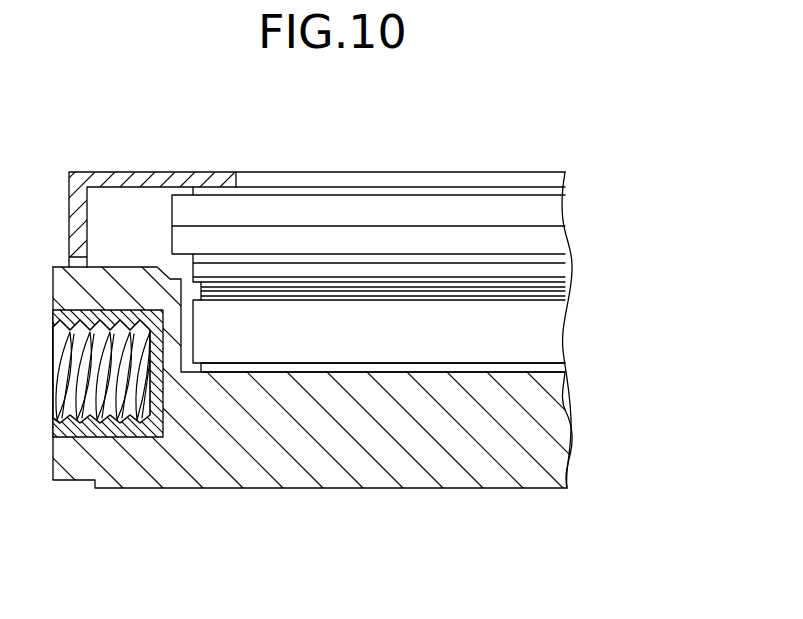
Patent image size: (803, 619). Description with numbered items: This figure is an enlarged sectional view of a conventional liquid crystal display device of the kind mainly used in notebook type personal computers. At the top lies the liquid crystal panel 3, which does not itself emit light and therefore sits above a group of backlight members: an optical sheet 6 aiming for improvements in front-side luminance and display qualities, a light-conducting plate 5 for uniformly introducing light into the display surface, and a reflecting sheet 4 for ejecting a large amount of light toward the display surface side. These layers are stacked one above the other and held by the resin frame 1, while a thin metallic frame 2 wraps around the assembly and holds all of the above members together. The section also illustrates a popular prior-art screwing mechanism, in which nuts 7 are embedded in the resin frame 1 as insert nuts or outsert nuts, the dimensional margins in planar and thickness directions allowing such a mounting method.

The resin frame 1 is at (388, 447).
The thin metallic frame 2 is at (153, 182).
The liquid crystal panel 3 is at (435, 193).
The reflecting sheet 4 is at (520, 367).
The light-conducting plate 5 is at (537, 332).
The optical sheet 6 is at (578, 300).
The nut 7 is at (90, 432).